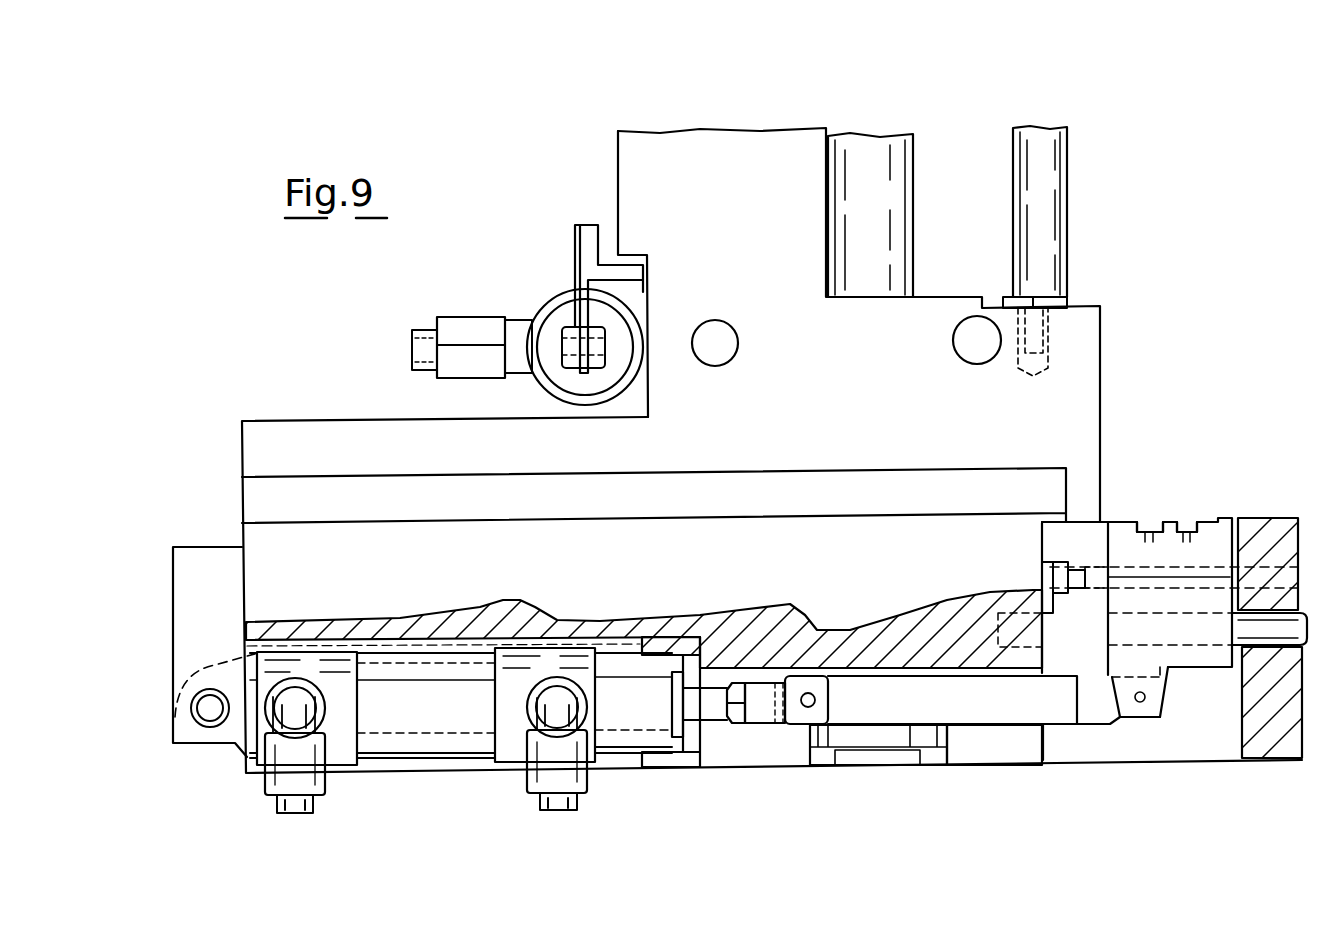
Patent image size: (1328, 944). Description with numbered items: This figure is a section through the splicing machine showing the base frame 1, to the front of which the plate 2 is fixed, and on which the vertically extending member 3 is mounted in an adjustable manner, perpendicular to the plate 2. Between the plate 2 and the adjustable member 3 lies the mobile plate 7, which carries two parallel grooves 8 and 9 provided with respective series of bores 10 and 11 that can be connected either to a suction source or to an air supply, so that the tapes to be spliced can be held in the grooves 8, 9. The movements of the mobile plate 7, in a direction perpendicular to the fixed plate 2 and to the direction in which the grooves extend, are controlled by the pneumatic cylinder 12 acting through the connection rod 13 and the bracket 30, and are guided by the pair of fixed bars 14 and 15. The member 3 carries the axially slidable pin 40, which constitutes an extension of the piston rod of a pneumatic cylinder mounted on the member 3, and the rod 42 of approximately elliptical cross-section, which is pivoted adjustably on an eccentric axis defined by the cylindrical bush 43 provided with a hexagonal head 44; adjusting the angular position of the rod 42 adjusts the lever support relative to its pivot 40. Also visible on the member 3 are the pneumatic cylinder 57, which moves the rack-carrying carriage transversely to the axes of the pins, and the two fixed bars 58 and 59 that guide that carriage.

The base frame 1 is at (253, 538).
The plate 2 is at (1260, 532).
The vertically extending member 3 is at (628, 181).
The mobile plate 7 is at (1218, 522).
The groove 8 is at (1145, 525).
The groove 9 is at (1193, 527).
The bores 10 is at (1148, 540).
The bores 11 is at (1184, 540).
The pneumatic cylinder 12 is at (417, 742).
The connection rod 13 is at (963, 715).
The fixed bar 14 is at (1243, 690).
The fixed bar 15 is at (1278, 567).
The bracket 30 is at (1180, 657).
The axially slidable pin 40 is at (897, 193).
The rod of approximately elliptical cross-section 42 is at (1045, 197).
The cylindrical bush 43 is at (1043, 337).
The hexagonal head 44 is at (1013, 300).
The pneumatic cylinder 57 is at (557, 316).
The fixed bar 58 is at (722, 352).
The fixed bar 59 is at (970, 352).